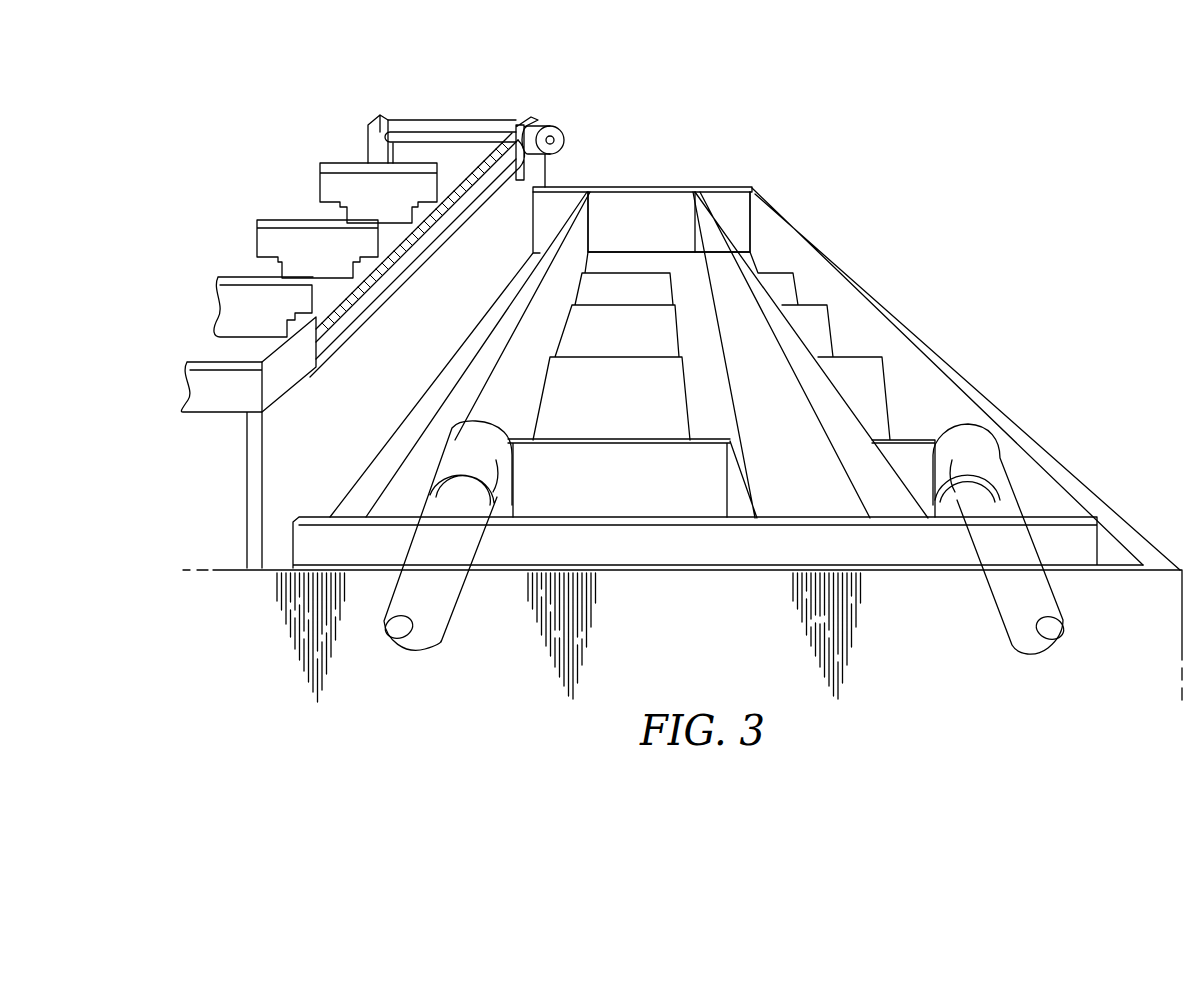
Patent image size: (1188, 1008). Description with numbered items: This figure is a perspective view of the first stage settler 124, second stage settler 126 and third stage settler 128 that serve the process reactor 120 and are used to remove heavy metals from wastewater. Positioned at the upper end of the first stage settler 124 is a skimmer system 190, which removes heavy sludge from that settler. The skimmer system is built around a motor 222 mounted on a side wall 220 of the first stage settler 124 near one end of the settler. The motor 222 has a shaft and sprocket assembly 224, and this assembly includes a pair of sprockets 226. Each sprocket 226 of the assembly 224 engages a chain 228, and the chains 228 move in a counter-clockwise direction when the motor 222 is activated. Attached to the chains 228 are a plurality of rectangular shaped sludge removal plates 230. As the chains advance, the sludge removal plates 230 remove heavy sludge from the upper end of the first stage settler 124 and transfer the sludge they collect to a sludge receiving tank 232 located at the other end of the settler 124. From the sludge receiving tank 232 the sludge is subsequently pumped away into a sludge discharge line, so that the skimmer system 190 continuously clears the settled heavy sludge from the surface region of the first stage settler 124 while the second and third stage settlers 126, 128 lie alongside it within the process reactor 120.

The process reactor 120 is at (736, 320).
The first stage settler 124 is at (538, 168).
The second stage settler 126 is at (654, 187).
The third stage settler 128 is at (730, 186).
The skimmer system 190 is at (473, 218).
The side wall 220 is at (309, 345).
The motor 222 is at (545, 125).
The shaft and sprocket assembly 224 is at (412, 138).
The sprocket 226 is at (512, 183).
The chain 228 is at (465, 200).
The sludge removal plate 230 is at (340, 176).
The sludge receiving tank 232 is at (458, 172).